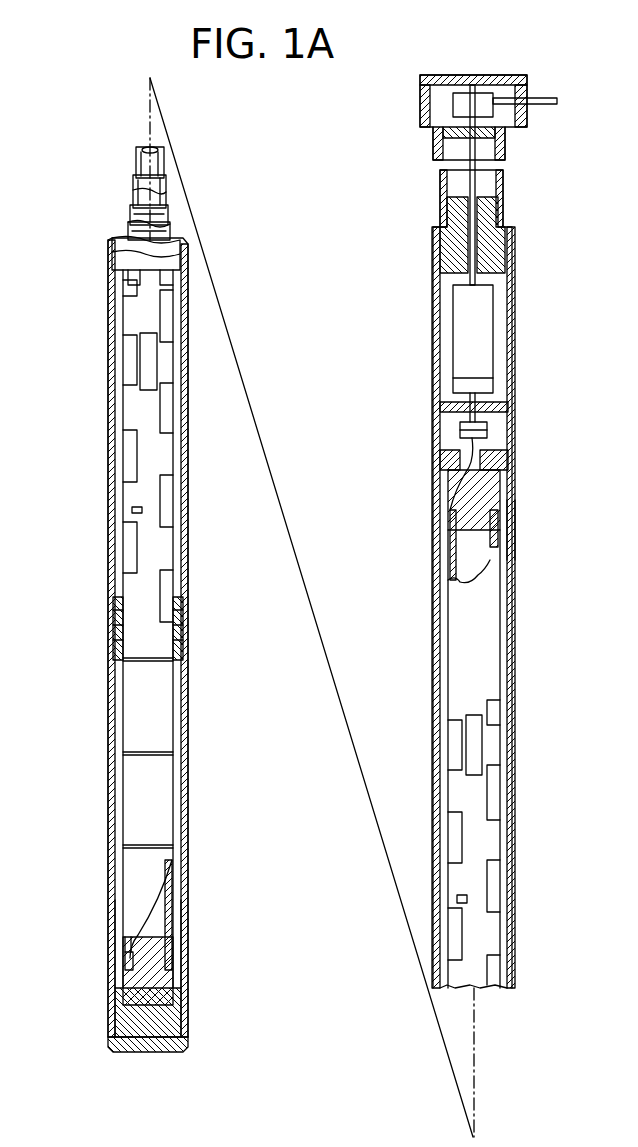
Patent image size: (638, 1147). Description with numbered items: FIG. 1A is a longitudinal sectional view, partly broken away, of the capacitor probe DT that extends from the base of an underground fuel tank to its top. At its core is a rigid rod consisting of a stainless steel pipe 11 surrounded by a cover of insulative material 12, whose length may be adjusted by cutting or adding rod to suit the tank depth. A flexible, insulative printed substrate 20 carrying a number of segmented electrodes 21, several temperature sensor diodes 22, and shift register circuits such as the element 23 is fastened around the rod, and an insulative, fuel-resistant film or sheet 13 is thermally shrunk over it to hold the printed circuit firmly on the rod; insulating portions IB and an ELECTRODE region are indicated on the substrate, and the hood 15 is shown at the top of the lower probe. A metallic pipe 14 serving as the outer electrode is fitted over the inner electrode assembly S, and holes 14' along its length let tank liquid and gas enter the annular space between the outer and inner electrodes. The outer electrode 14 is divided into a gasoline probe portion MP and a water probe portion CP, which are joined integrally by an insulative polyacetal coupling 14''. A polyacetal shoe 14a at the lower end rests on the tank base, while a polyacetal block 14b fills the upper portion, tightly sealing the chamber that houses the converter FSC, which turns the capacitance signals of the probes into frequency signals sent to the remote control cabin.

The pipe 11 is at (160, 162).
The cover of insulative material 12 is at (160, 194).
The film or sheet 13 is at (162, 238).
The metallic pipe 14 is at (275, 641).
The holes 14' is at (347, 744).
The coupling 14'' is at (182, 628).
The shoe 14a is at (165, 1050).
The block 14b is at (505, 228).
The protective hood 15 is at (125, 268).
The flexible and insulative substrate 20 is at (168, 218).
The segmented electrodes 21 is at (168, 572).
The temperature sensor diodes 22 is at (128, 512).
The circuit element 23 is at (150, 365).
The assembly of the inner segmented electrodes S is at (118, 188).
The probe portion MP is at (100, 498).
The probe portion CP is at (100, 832).
The capacitor probe DT is at (412, 298).
The insulating block IB is at (147, 400).
The means for converting electric signals FSC is at (482, 316).
The electrode ELECTRODE is at (162, 828).